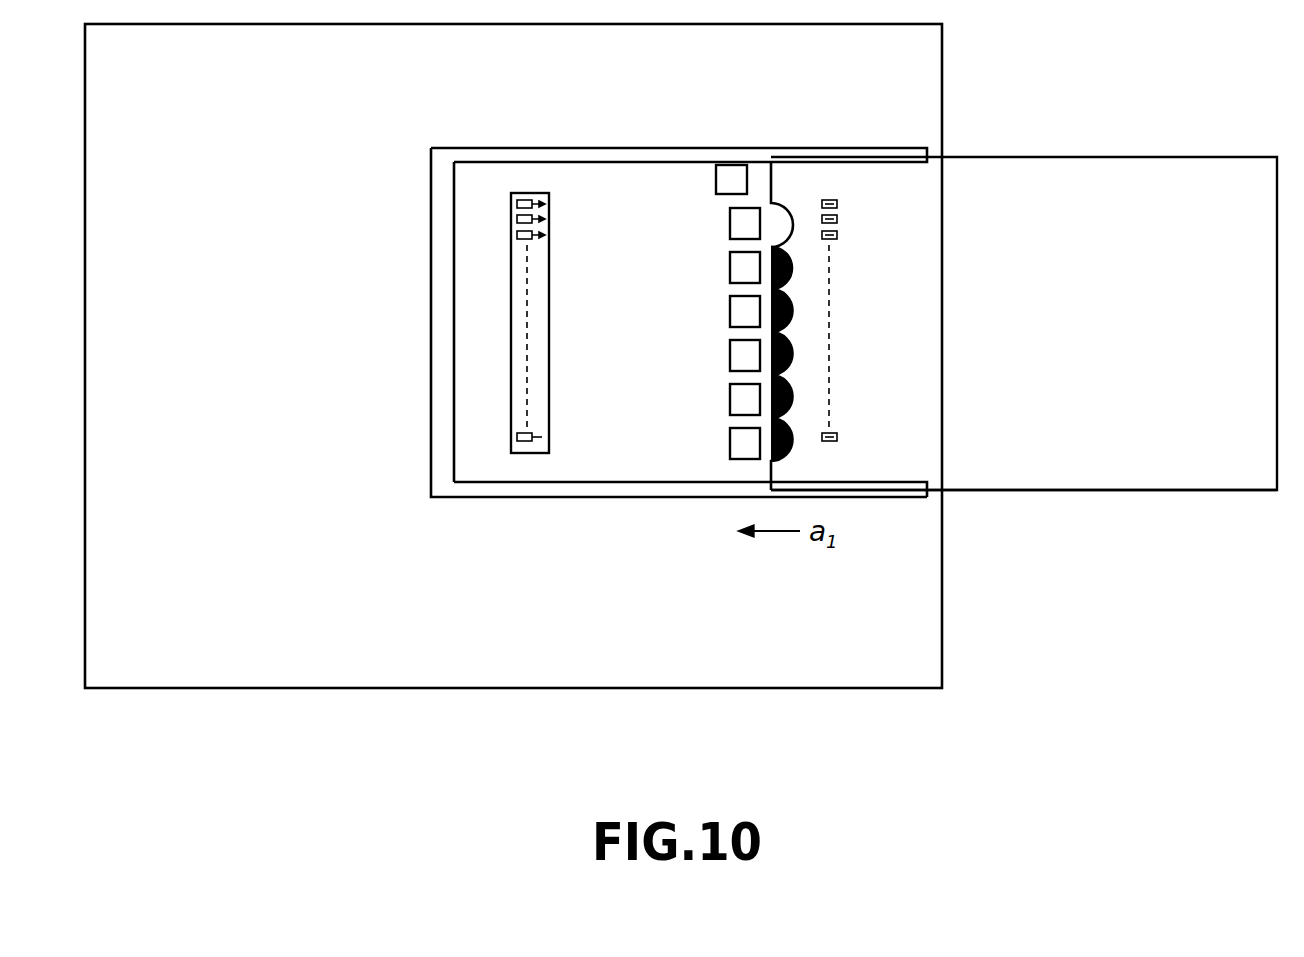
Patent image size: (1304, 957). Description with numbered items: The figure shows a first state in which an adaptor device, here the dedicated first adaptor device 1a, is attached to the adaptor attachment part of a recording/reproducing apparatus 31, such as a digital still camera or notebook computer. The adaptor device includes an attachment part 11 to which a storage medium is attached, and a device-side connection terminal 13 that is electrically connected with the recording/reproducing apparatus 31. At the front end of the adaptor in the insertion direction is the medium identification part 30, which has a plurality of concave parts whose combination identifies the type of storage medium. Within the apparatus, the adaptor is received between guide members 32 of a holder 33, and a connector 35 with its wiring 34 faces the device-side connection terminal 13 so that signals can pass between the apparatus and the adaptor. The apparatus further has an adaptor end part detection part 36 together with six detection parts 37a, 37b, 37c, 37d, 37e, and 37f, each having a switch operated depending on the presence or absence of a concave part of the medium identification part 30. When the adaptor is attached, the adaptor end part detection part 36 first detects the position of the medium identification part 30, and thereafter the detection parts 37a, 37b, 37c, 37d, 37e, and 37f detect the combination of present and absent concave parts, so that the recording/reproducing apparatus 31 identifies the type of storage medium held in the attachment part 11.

The first adaptor device 1a is at (1070, 491).
The attachment part 11 is at (1099, 228).
The device-side connection terminal 13 is at (840, 205).
The medium identification part 30 is at (770, 178).
The recording/reproducing apparatus 31 is at (583, 689).
The guide rails 32 is at (598, 148).
The holder 33 is at (440, 452).
The wiring 34 is at (510, 348).
The connector 35 is at (528, 193).
The adaptor end part detection part 36 is at (716, 181).
The detection part 37a is at (730, 224).
The detection part 37b is at (730, 268).
The detection part 37c is at (730, 312).
The detection part 37d is at (730, 355).
The detection part 37e is at (730, 399).
The detection part 37f is at (730, 441).